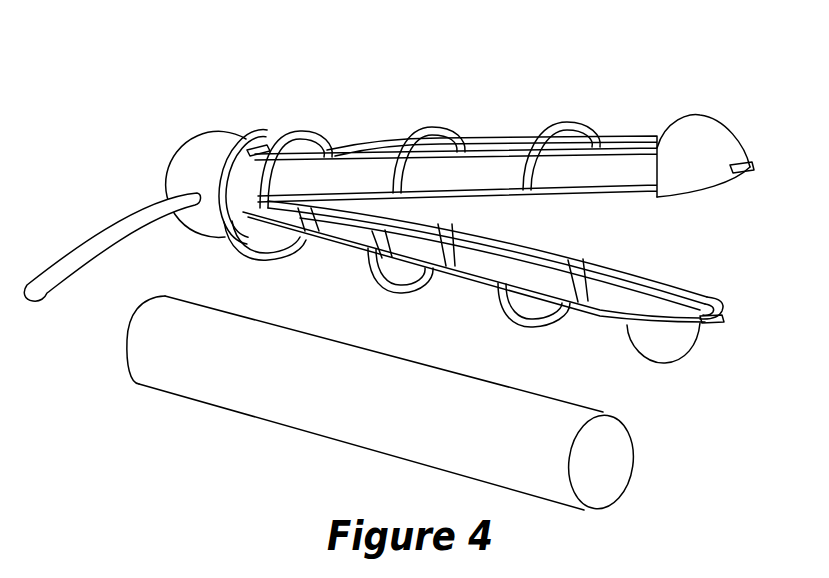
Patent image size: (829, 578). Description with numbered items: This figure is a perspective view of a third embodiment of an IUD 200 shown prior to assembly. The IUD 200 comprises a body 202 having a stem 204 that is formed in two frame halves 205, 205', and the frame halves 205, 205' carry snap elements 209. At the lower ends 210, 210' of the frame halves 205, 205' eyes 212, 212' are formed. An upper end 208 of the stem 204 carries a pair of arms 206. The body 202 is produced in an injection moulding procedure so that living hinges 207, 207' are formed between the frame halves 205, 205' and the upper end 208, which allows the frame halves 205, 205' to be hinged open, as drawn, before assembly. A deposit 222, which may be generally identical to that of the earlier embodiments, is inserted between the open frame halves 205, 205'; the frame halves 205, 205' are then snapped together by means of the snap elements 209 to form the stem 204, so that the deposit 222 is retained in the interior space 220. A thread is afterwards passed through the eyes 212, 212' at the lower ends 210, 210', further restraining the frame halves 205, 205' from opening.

The IUD 200 is at (383, 97).
The body 202 is at (230, 240).
The stem 204 is at (347, 248).
The frame half 205 is at (469, 300).
The frame half 205' is at (430, 136).
The arms 206 is at (62, 281).
The living hinge 207 is at (266, 267).
The living hinge 207' is at (252, 156).
The upper end 208 is at (208, 148).
The snap elements 209 is at (528, 202).
The lower end 210 is at (706, 282).
The lower end 210' is at (689, 181).
The eye 212 is at (675, 366).
The eye 212' is at (746, 203).
The interior space 220 is at (608, 297).
The deposit 222 is at (330, 355).